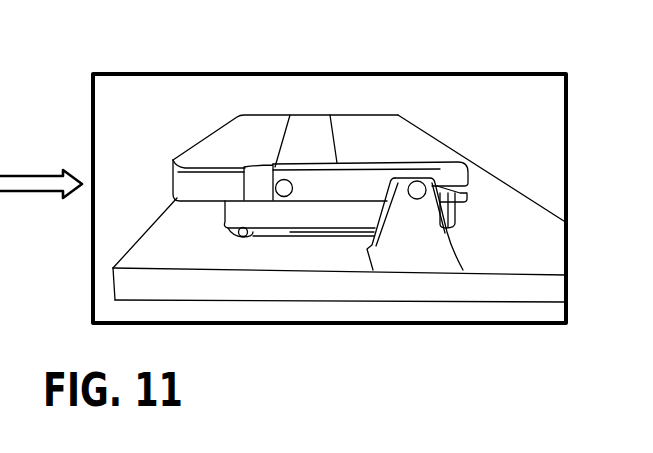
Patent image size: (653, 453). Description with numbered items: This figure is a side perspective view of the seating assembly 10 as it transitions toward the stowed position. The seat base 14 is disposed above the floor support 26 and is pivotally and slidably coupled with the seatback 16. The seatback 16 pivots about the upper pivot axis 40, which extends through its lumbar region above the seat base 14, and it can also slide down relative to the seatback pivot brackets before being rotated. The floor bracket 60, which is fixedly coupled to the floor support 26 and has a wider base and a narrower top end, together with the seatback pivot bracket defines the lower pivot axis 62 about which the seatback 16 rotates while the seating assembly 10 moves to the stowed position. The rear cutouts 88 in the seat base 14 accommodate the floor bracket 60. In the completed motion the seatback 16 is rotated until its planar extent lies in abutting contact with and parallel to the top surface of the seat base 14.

The seating assembly 10 is at (510, 35).
The seat base 14 is at (328, 218).
The seatback 16 is at (227, 143).
The floor support 26 is at (515, 255).
The upper pivot axis 40 is at (287, 186).
The floor bracket 60 is at (412, 242).
The lower pivot axis 62 is at (417, 186).
The rear cutouts 88 is at (453, 192).